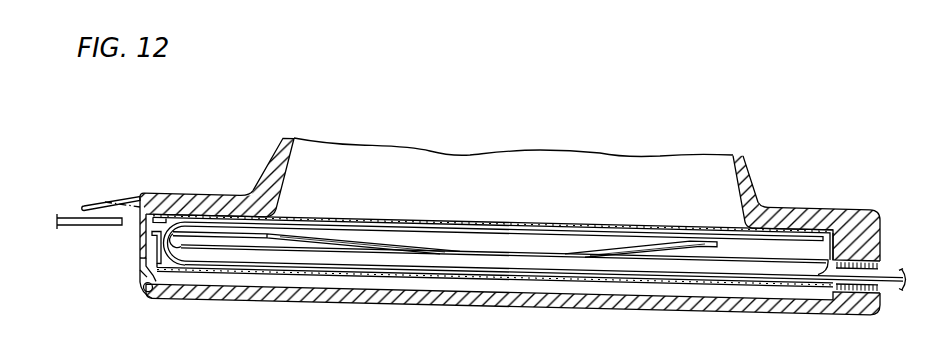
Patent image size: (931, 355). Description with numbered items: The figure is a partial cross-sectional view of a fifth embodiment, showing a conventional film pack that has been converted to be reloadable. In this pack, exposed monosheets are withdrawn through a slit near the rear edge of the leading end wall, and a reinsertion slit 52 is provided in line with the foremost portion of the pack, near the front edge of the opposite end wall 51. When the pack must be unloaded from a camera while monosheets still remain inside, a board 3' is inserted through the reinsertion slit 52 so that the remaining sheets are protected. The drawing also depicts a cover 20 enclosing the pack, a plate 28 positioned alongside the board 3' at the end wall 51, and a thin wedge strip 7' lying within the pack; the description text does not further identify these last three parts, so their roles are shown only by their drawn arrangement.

The cover 20 is at (743, 180).
The plate 28 is at (107, 201).
The reinsertion slit 52 is at (160, 217).
The board 3' is at (84, 242).
The end wall 51 is at (137, 237).
The wedge strip 7' is at (492, 288).